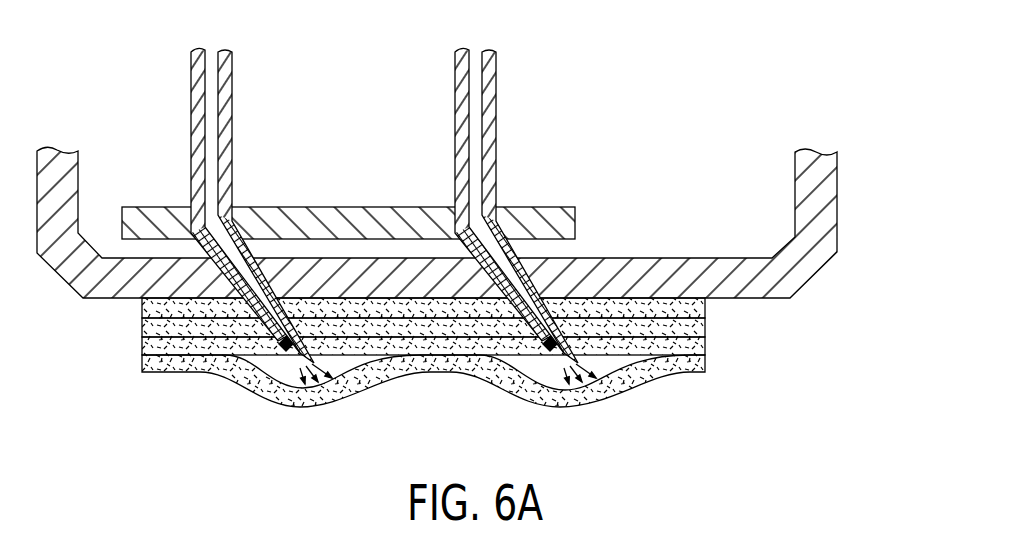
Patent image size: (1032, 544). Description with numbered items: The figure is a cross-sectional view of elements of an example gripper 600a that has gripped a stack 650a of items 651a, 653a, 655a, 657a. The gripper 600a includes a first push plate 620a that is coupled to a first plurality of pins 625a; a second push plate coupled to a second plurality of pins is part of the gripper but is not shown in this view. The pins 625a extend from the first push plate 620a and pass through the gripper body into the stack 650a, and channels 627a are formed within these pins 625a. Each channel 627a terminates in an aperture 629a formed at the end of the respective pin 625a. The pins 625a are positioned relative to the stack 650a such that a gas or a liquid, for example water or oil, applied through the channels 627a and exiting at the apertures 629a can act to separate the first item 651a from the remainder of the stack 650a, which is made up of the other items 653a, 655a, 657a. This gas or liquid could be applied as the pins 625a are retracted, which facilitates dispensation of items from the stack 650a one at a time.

The gripper 600a is at (840, 90).
The first push plate 620a is at (345, 207).
The first plurality of pins 625a is at (252, 301).
The channels 627a is at (282, 344).
The apertures 629a is at (600, 359).
The stack 650a is at (428, 381).
The first item 651a is at (150, 362).
The item 653a is at (695, 345).
The item 655a is at (142, 328).
The item 657a is at (693, 308).